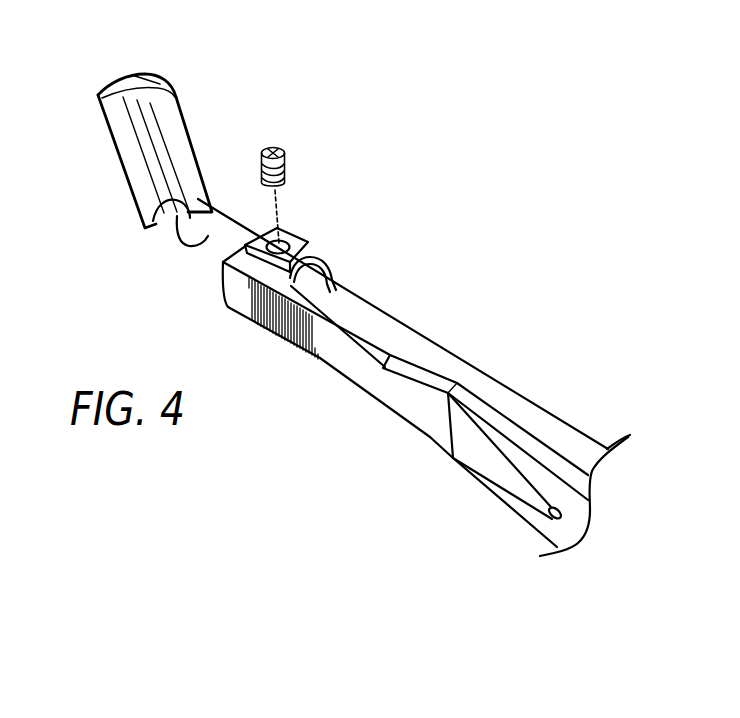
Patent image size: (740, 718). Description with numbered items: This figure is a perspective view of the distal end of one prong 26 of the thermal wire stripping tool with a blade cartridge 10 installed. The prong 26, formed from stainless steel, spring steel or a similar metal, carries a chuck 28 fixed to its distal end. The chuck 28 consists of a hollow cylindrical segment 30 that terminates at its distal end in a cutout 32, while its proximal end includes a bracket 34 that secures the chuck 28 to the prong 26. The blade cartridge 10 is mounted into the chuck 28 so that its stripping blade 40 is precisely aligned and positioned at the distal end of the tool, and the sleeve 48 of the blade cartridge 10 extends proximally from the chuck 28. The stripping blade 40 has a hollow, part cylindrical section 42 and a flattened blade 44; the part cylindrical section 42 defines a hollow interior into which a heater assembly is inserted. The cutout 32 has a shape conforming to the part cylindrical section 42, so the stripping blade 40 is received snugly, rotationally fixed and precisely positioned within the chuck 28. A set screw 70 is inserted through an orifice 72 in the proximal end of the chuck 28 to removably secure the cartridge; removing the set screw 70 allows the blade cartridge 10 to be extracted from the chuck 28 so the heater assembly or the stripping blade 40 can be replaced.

The blade cartridge 10 is at (397, 304).
The prong 26 is at (358, 378).
The chuck 28 is at (233, 207).
The hollow cylindrical segment 30 is at (208, 250).
The cutout 32 is at (157, 217).
The bracket 34 is at (318, 250).
The stripping blade 40 is at (181, 70).
The part cylindrical section 42 is at (186, 144).
The flattened blade 44 is at (113, 150).
The sleeve 48 is at (436, 356).
The set screw 70 is at (292, 156).
The orifice 72 is at (302, 243).